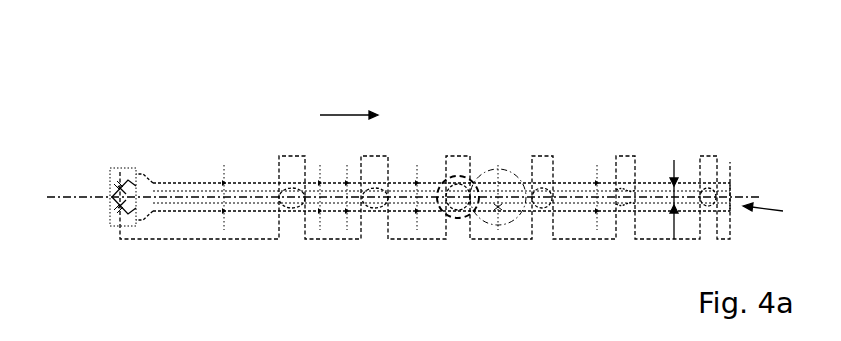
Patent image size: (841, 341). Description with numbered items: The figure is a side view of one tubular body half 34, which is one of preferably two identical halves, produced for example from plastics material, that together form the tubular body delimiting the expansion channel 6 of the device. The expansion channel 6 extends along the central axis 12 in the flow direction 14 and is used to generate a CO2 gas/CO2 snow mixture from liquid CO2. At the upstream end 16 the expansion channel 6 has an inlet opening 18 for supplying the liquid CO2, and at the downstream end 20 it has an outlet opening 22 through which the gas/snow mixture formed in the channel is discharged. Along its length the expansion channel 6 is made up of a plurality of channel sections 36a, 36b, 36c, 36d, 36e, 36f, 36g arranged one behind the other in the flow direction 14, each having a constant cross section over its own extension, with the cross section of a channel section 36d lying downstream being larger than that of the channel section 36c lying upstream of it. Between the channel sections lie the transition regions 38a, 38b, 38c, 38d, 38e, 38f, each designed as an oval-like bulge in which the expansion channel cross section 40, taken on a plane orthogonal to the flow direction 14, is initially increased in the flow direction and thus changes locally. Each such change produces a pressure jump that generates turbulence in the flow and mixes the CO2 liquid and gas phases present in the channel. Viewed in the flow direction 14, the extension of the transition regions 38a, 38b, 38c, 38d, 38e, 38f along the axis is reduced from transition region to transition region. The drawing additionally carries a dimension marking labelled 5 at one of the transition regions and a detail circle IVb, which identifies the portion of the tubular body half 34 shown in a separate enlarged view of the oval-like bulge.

The expansion channel 6 is at (333, 190).
The central axis 12 is at (72, 200).
The flow direction 14 is at (343, 112).
The upstream end 16 is at (81, 184).
The inlet opening 18 is at (118, 198).
The downstream end 20 is at (777, 210).
The outlet opening 22 is at (730, 190).
The tubular body half 34 is at (419, 76).
The channel section 36a is at (202, 239).
The channel section 36b is at (335, 239).
The channel section 36c is at (418, 239).
The channel section 36d is at (502, 239).
The channel section 36e is at (586, 239).
The channel section 36f is at (668, 239).
The channel section 36g is at (725, 239).
The transition region 38a is at (292, 156).
The transition region 38b is at (375, 156).
The transition region 38c is at (458, 156).
The transition region 38d is at (542, 156).
The transition region 38e is at (625, 156).
The transition region 38f is at (708, 156).
The expansion channel cross section 40 is at (663, 184).
The bearing width dimension 5 is at (658, 223).
The detail view IVb is at (477, 178).